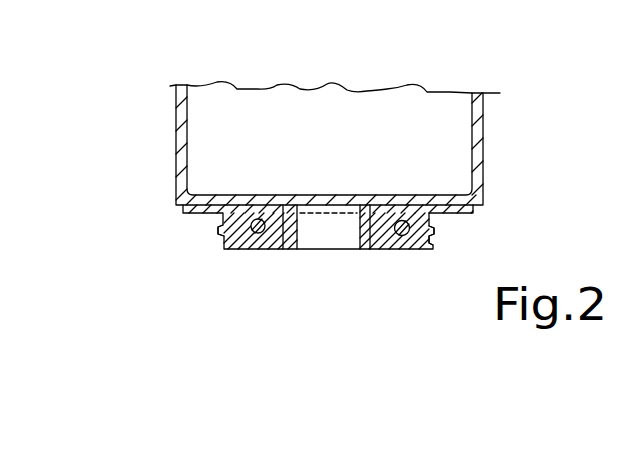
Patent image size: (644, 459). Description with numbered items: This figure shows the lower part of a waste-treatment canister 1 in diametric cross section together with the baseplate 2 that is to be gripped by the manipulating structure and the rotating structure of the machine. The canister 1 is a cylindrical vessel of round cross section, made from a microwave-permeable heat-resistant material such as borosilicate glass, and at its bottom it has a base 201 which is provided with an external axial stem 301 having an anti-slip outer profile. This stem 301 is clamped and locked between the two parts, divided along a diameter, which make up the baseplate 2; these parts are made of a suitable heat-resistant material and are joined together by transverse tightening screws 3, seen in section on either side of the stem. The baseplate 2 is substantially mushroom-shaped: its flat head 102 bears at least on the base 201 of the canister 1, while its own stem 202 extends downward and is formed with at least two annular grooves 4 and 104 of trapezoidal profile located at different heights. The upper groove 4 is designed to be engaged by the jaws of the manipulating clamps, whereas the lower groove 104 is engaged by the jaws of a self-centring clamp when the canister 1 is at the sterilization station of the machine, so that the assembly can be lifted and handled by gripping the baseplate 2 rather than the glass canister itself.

The canister 1 is at (483, 135).
The baseplate 2 is at (415, 253).
The transverse tightening screws 3 is at (254, 240).
The upper annular groove 4 is at (430, 220).
The flat head 102 is at (203, 215).
The lower annular groove 104 is at (433, 242).
The base 201 is at (402, 200).
The stem 202 is at (225, 228).
The external axial stem 301 is at (293, 225).